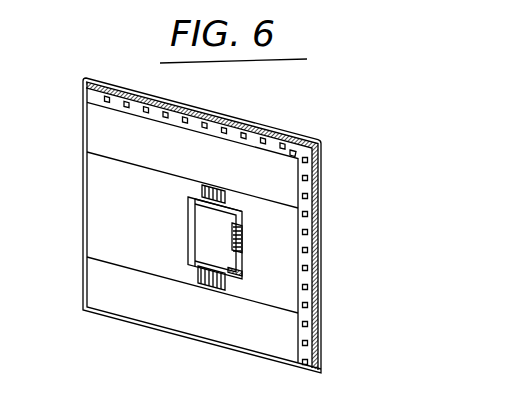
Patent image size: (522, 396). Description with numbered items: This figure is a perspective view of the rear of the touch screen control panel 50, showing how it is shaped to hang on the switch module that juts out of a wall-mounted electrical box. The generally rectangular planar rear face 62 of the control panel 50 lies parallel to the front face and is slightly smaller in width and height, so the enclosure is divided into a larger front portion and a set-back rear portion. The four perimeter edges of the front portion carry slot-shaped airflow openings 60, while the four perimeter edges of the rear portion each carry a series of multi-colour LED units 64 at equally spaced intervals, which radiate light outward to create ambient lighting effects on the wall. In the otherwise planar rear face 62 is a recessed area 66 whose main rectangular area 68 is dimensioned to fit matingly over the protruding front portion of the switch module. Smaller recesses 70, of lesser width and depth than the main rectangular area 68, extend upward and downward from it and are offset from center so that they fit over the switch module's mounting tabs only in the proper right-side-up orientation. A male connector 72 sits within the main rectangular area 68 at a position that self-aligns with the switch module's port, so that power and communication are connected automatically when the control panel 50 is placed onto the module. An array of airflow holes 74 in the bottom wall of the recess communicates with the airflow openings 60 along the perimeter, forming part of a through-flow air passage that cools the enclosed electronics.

The control panel 50 is at (76, 57).
The airflow openings 60 is at (262, 124).
The rear face 62 is at (107, 231).
The multi-colour LED units 64 is at (143, 103).
The recessed area 66 is at (205, 208).
The main rectangular area 68 is at (200, 232).
The smaller recesses 70 is at (205, 191).
The male connector 72 is at (232, 234).
The airflow holes 74 is at (234, 270).